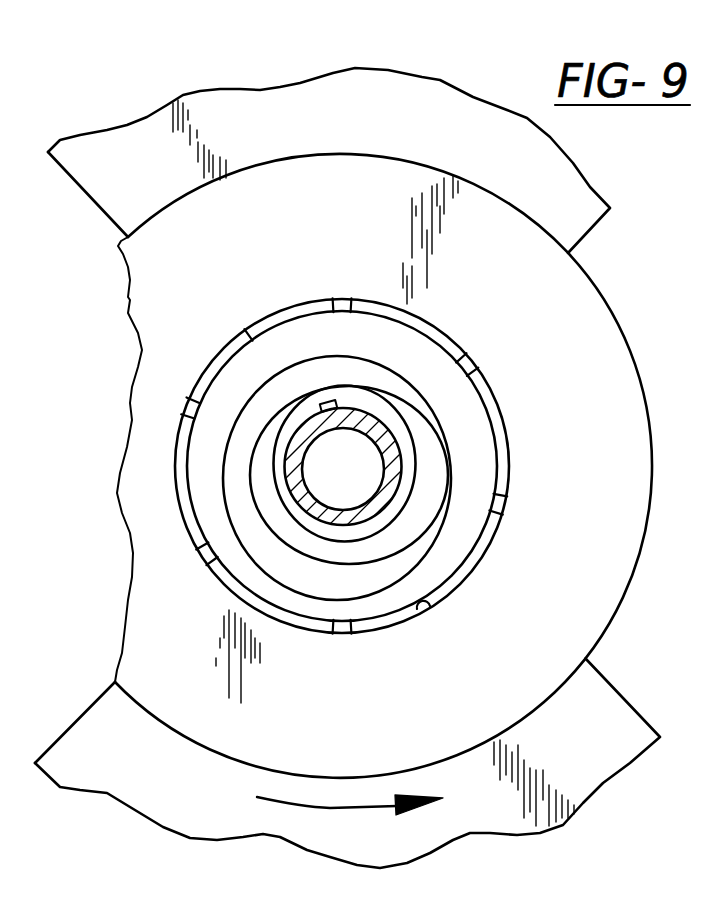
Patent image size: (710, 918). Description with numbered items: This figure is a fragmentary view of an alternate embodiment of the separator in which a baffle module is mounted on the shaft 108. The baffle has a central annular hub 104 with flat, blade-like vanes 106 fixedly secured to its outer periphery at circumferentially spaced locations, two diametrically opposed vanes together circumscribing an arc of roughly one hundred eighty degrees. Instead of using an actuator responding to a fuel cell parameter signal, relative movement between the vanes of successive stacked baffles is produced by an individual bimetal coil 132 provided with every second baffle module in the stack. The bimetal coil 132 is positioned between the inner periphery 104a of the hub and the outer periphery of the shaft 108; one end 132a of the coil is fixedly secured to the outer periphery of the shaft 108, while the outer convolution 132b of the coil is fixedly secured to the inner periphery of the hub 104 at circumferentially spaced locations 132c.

The central annular hub 104 is at (343, 212).
The inner periphery of the hub 104a is at (430, 609).
The vane 106 is at (358, 118).
The shaft 108 is at (398, 428).
The bimetal coil 132 is at (451, 453).
The end of the bimetal coil 132a is at (331, 402).
The outer convolution of the bimetal coil 132b is at (247, 330).
The circumferentially spaced locations 132c is at (345, 297).